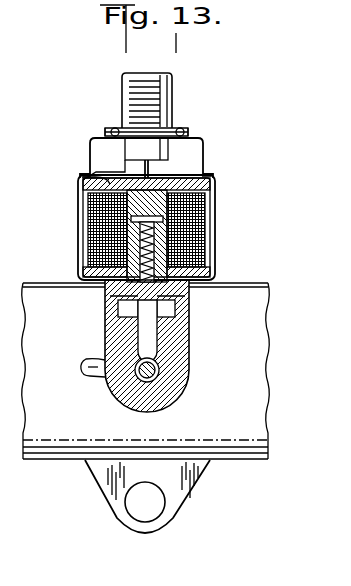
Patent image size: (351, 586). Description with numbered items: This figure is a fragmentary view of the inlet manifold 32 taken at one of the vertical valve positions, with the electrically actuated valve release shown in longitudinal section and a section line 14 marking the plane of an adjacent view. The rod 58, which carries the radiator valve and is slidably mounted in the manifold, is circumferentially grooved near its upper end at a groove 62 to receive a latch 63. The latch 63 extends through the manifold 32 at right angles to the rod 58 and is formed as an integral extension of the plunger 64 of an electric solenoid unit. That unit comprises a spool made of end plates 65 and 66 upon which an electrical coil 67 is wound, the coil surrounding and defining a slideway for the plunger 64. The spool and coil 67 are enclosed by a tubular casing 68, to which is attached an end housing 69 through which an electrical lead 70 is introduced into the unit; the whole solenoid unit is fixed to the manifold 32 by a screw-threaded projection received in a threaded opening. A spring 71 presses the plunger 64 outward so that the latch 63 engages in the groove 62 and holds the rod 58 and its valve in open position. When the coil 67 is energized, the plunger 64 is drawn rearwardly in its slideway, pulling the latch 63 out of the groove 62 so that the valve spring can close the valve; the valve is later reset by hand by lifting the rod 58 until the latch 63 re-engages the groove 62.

The section line 14 is at (167, 62).
The manifold 32 is at (239, 413).
The rod 58 is at (116, 384).
The circumferential groove 62 is at (157, 371).
The latch 63 is at (145, 329).
The plunger 64 is at (163, 241).
The end plate 65 is at (83, 271).
The end plate 66 is at (112, 185).
The electrical coil 67 is at (194, 200).
The tubular casing 68 is at (78, 207).
The end housing 69 is at (92, 148).
The electrical lead 70 is at (117, 172).
The spring 71 is at (147, 222).